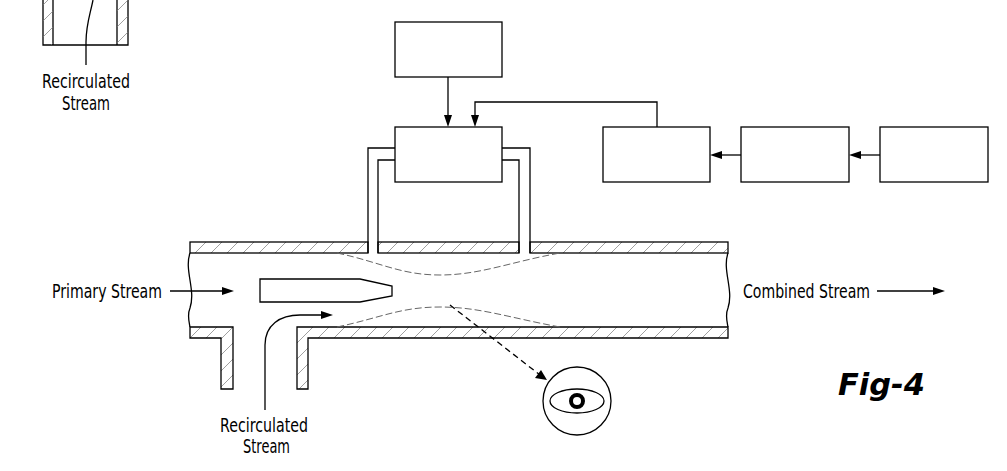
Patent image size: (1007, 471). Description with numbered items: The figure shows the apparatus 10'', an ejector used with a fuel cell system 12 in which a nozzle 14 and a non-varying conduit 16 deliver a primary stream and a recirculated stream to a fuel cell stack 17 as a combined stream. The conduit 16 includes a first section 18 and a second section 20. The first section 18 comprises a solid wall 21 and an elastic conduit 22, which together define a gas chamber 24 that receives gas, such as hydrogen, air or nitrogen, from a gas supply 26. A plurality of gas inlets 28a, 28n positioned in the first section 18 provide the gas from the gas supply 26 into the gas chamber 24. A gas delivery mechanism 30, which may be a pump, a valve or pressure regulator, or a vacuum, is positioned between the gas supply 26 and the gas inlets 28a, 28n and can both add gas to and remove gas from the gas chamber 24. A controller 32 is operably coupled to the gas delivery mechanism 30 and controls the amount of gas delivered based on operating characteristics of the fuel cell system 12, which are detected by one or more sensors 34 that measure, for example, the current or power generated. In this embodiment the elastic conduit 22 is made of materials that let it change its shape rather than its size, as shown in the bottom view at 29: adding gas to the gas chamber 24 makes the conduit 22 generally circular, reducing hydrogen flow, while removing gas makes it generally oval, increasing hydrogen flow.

The apparatus 10'' is at (304, 104).
The fuel cell system 12 is at (933, 127).
The nozzle 14 is at (296, 279).
The conduit 16 is at (610, 230).
The fuel cell stack 17 is at (938, 273).
The first section 18 is at (552, 226).
The second section 20 is at (252, 225).
The solid wall 21 is at (704, 253).
The elastic conduit 22 is at (500, 272).
The gas chamber 24 is at (444, 265).
The gas supply 26 is at (502, 50).
The gas inlet 28a is at (368, 235).
The gas inlet 28n is at (519, 235).
The bottom view of the conduit 29 is at (535, 413).
The gas delivery mechanism 30 is at (410, 127).
The controller 32 is at (697, 127).
The sensor 34 is at (795, 127).